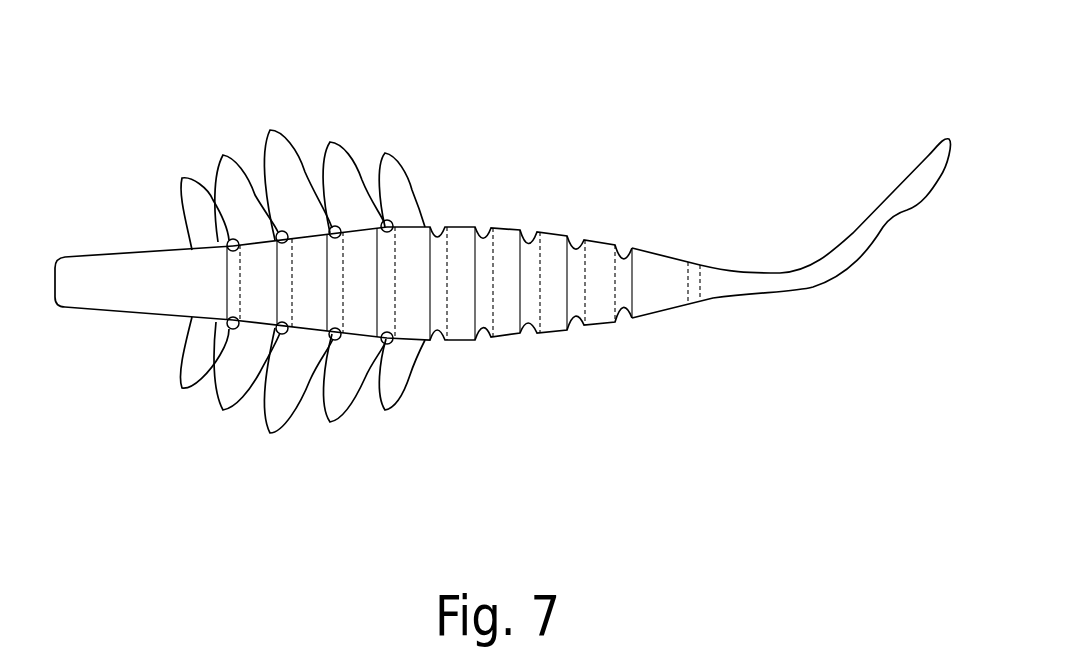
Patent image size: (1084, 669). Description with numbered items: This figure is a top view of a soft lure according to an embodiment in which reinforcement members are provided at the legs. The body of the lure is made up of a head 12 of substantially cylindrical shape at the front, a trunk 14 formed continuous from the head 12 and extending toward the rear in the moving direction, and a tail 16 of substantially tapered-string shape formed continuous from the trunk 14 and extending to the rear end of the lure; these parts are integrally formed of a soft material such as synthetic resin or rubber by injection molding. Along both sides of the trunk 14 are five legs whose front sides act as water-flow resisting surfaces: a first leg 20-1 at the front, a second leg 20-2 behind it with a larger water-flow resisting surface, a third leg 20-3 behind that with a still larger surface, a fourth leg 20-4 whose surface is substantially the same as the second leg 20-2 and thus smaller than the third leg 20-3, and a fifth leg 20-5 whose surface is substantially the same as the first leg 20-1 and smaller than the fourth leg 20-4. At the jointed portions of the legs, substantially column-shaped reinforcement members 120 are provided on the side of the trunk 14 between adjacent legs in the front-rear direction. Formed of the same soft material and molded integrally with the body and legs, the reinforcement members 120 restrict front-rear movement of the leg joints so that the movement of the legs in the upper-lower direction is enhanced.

The head 12 is at (80, 270).
The trunk 14 is at (504, 260).
The tail 16 is at (742, 280).
The first leg 20-1 is at (184, 180).
The second leg 20-2 is at (222, 157).
The third leg 20-3 is at (270, 132).
The fourth leg 20-4 is at (330, 144).
The fifth leg 20-5 is at (393, 167).
The reinforcement member 120 is at (279, 232).